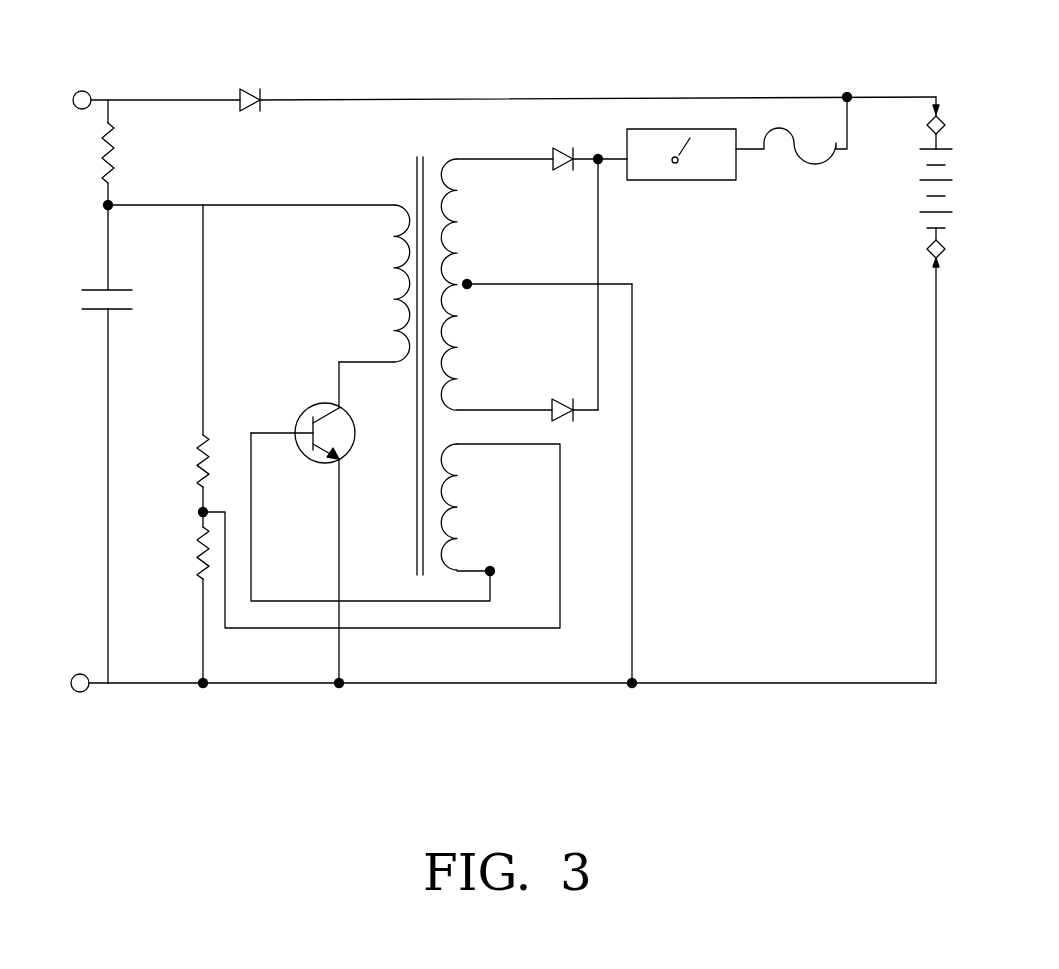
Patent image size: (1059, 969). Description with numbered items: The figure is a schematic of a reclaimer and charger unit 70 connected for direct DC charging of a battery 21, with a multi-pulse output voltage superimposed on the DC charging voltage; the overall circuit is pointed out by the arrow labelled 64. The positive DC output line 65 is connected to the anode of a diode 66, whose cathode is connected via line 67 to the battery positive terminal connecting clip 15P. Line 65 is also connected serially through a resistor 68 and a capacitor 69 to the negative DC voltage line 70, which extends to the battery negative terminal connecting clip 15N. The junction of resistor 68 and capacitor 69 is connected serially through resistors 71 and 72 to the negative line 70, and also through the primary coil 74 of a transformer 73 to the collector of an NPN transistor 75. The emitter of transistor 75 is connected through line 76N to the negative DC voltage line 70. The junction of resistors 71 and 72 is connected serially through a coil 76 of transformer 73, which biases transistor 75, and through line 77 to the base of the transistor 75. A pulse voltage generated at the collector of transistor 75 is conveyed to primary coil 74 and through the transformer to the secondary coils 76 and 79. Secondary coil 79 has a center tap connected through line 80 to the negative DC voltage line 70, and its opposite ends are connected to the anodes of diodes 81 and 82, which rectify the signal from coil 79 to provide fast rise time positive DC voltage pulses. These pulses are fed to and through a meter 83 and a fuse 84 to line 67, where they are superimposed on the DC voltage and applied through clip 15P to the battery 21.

The battery positive terminal connecting clip 15P is at (943, 118).
The battery negative terminal connecting clip 15N is at (943, 256).
The battery 21 is at (952, 180).
The charging circuit 64 is at (410, 708).
The positive DC output line 65 is at (143, 100).
The diode 66 is at (253, 71).
The line 67 is at (436, 98).
The resistor 68 is at (98, 153).
The capacitor 69 is at (92, 310).
The negative DC voltage line 70 is at (130, 683).
The resistor 71 is at (200, 463).
The resistor 72 is at (200, 552).
The transformer 73 is at (371, 352).
The primary coil 74 is at (398, 238).
The NPN transistor 75 is at (313, 403).
The coil 76 is at (460, 508).
The line 76N is at (337, 570).
The line 77 is at (490, 572).
The secondary coil 79 is at (453, 222).
The line 80 is at (508, 287).
The diode 81 is at (553, 160).
The diode 82 is at (552, 402).
The meter 83 is at (689, 182).
The fuse 84 is at (815, 163).